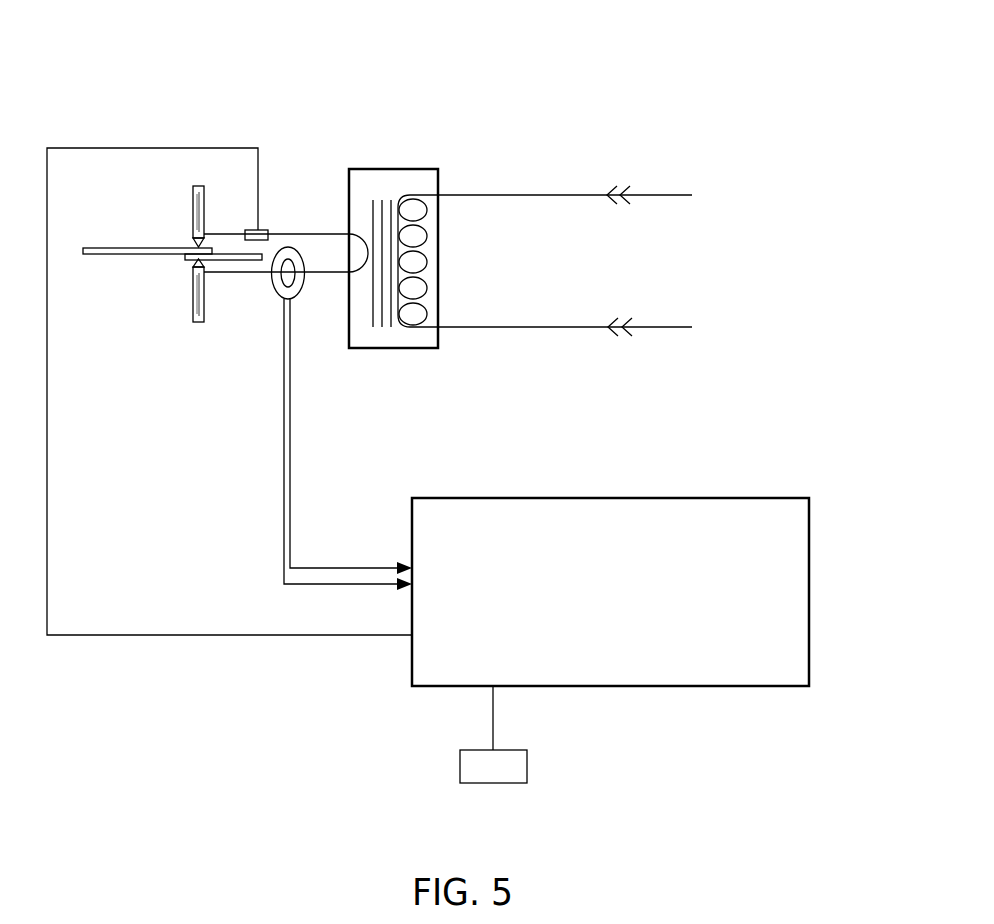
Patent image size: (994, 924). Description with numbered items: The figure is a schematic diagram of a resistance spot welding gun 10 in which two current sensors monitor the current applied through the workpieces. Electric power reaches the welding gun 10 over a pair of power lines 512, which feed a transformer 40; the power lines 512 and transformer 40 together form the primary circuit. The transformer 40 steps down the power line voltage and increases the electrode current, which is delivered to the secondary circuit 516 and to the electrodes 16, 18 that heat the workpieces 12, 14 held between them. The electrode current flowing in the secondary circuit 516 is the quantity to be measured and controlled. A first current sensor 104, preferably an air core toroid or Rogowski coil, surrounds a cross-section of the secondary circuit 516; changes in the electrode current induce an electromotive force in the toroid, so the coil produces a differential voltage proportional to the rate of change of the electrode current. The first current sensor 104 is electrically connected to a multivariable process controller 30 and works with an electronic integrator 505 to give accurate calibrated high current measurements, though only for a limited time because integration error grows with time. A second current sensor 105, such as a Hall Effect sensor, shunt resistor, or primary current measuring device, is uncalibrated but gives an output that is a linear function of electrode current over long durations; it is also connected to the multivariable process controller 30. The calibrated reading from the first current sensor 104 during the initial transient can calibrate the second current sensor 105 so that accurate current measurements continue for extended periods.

The resistance spot welding gun 10 is at (509, 77).
The workpiece 12 is at (107, 257).
The workpiece 14 is at (225, 254).
The electrode 16 is at (192, 262).
The electrode 18 is at (192, 245).
The multivariable process controller 30 is at (535, 497).
The transformer 40 is at (411, 158).
The first current sensor 104 is at (276, 296).
The second current sensor 105 is at (264, 230).
The electronic integrator 505 is at (493, 734).
The power lines 512 is at (559, 194).
The secondary circuit 516 is at (326, 278).